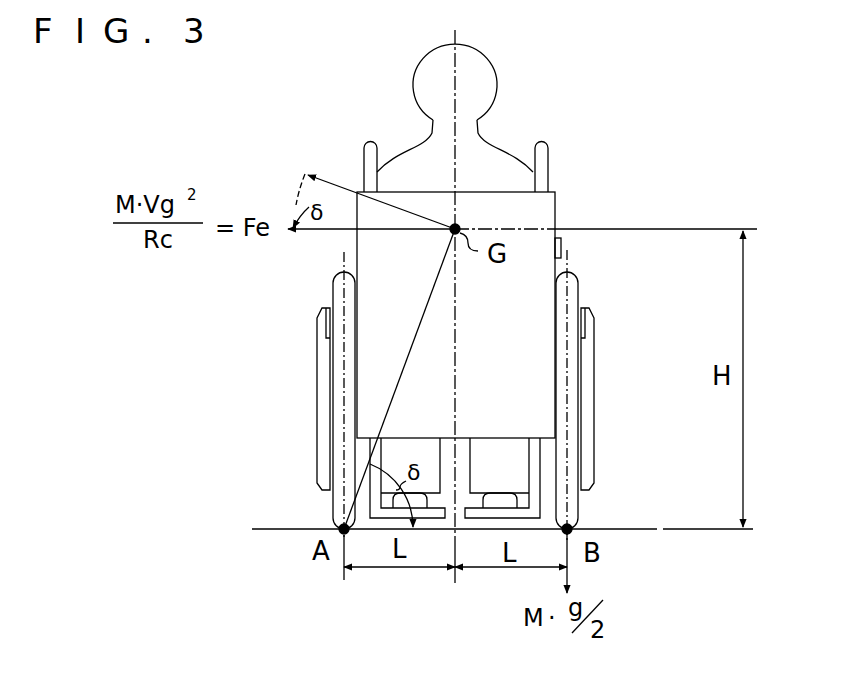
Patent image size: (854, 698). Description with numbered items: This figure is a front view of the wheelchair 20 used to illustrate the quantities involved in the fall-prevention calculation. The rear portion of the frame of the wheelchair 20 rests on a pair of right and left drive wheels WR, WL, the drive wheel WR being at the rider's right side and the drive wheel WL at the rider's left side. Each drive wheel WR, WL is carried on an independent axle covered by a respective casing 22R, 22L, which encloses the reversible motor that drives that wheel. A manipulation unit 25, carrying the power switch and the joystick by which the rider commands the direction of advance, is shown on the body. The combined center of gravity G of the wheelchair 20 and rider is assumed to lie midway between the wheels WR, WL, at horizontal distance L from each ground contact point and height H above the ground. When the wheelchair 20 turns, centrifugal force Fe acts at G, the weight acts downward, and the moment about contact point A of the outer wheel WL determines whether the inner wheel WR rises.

The wheelchair 20 is at (564, 198).
The manipulation unit 25 is at (563, 242).
The casing 22L is at (330, 382).
The casing 22R is at (597, 378).
The left drive wheel WL is at (333, 284).
The right drive wheel WR is at (582, 285).